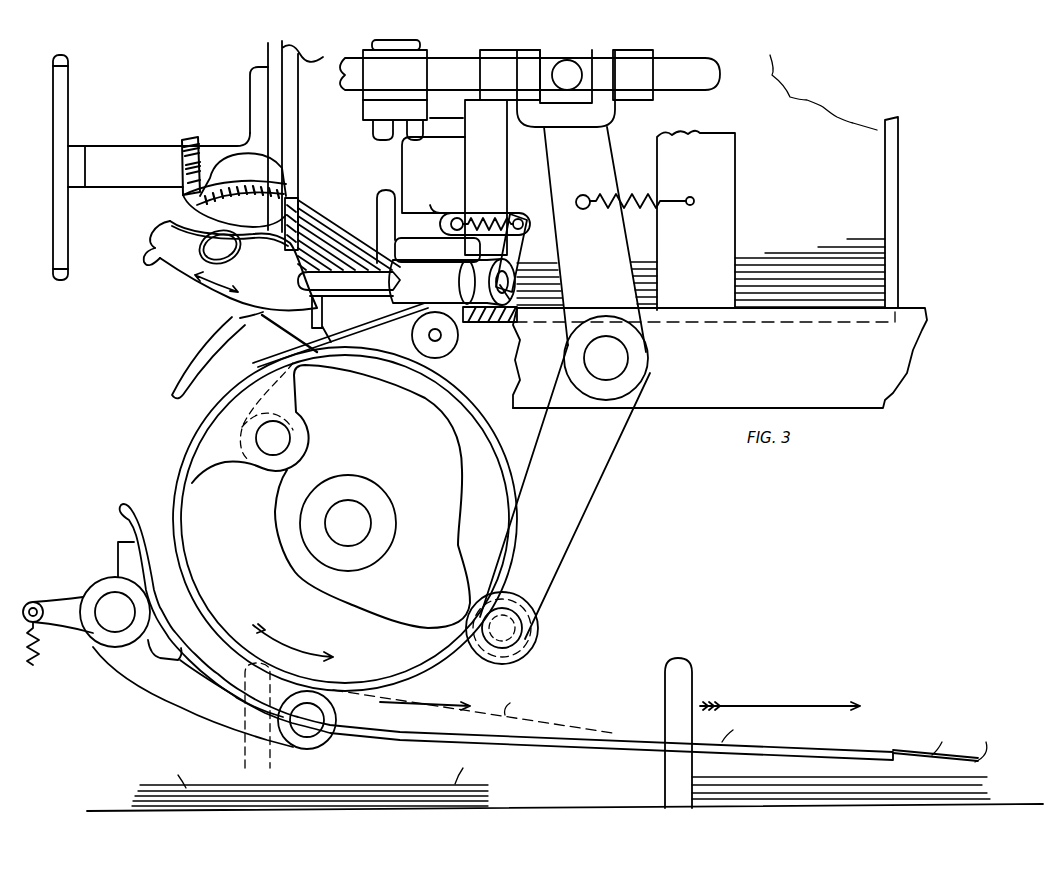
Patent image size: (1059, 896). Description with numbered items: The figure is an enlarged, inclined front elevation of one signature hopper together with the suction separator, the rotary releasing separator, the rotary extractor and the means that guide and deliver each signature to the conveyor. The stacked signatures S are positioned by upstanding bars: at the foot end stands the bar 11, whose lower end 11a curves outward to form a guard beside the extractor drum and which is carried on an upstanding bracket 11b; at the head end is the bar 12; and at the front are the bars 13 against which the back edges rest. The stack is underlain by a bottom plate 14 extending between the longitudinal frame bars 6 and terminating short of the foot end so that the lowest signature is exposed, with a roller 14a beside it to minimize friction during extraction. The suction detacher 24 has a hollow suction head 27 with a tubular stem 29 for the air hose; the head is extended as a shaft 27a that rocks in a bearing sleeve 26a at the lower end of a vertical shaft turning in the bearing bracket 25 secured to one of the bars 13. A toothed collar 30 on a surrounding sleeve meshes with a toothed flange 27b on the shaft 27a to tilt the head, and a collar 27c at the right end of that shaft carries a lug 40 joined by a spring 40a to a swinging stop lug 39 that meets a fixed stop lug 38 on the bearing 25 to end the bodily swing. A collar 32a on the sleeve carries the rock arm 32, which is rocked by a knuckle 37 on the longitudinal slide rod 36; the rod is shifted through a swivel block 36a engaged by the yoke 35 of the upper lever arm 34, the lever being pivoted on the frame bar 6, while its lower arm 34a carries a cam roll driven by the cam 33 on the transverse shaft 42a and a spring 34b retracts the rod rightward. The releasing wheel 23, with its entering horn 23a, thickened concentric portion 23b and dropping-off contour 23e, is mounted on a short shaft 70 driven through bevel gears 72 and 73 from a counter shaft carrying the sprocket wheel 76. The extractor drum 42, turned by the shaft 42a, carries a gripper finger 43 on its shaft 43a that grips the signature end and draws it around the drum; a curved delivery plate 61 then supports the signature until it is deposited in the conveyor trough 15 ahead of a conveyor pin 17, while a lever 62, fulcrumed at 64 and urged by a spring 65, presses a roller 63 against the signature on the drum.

The longitudinal frame bar 6 is at (720, 323).
The foot end bar 11 is at (282, 49).
The curved lower end of bar 11a is at (180, 377).
The upstanding bracket 11b is at (252, 105).
The head end bar 12 is at (898, 148).
The back bars 13 is at (600, 205).
The bottom plate 14 is at (520, 323).
The roller 14a is at (455, 348).
The table 15 is at (572, 806).
The conveyor pin 17 is at (468, 733).
The releasing separator wheel 23 is at (238, 265).
The horn 23a is at (150, 267).
The concentric portion 23b is at (243, 324).
The dropping-off contour 23e is at (165, 232).
The suction detacher 24 is at (317, 262).
The bearing bracket 25 is at (433, 175).
The bearing sleeve 26a is at (438, 282).
The suction head 27 is at (349, 284).
The sucker head shaft 27a is at (510, 290).
The toothed flange 27b is at (338, 319).
The collar 27c is at (478, 322).
The tubular stem 29 is at (387, 226).
The toothed collar 30 is at (437, 250).
The rock arm 32 is at (438, 120).
The collar 32a is at (452, 130).
The cam 33 is at (331, 496).
The upper lever arm 34 is at (596, 263).
The lower lever arm 34a is at (558, 504).
The spring 34b is at (643, 195).
The yoke 35 is at (566, 88).
The slide rod 36 is at (530, 74).
The swivel block 36a is at (580, 58).
The knuckle 37 is at (395, 80).
The fixed stop lug 38 is at (475, 224).
The swinging stop lug 39 is at (470, 213).
The lug 40 is at (511, 253).
The spring 40a is at (504, 222).
The extractor drum 42 is at (183, 468).
The transverse shaft 42a is at (348, 523).
The gripper finger 43 is at (275, 351).
The finger shaft 43a is at (278, 440).
The delivery plate 61 is at (120, 512).
The swinging lever 62 is at (193, 697).
The roller 63 is at (333, 738).
The fulcrum 64 is at (86, 612).
The spring 65 is at (42, 648).
The short shaft 70 is at (215, 248).
The bevel gear 72 is at (198, 208).
The bevel gear 73 is at (183, 190).
The sprocket wheel 76 is at (53, 244).
The signature S is at (579, 736).